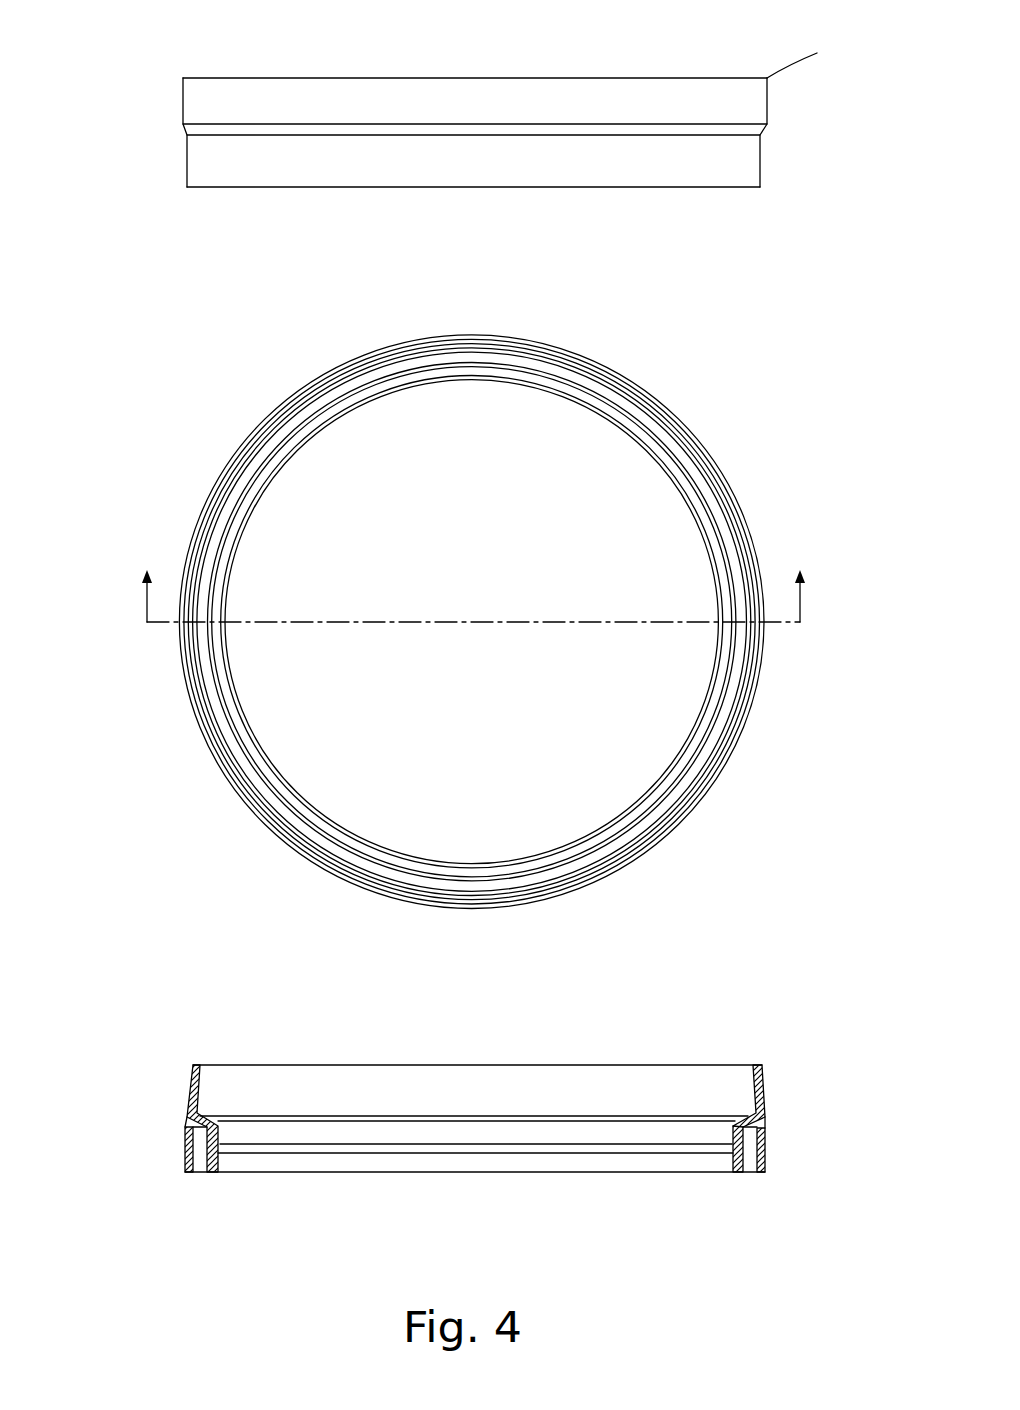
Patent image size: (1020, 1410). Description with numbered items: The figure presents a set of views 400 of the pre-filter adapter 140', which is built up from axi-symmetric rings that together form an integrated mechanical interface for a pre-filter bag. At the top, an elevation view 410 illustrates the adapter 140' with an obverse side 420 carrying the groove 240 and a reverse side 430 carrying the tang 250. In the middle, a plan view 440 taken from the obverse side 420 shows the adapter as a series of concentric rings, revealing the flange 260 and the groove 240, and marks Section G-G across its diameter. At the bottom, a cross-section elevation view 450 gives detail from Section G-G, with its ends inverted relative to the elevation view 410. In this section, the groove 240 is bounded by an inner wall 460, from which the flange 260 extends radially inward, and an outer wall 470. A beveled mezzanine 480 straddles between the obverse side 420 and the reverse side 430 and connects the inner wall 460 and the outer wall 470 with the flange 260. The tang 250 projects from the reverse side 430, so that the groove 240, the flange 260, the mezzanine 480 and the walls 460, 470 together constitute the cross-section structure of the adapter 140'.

The set of views 400 is at (121, 110).
The elevation view 410 is at (878, 211).
The reverse side 430 is at (760, 187).
The plan view 440 is at (875, 903).
The adapter 140' is at (471, 620).
The flange 260 is at (642, 448).
The groove 240 is at (722, 545).
The cross-section elevation view 450 is at (803, 1208).
The tang 250 is at (200, 1083).
The beveled mezzanine 480 is at (187, 1125).
The obverse side 420 is at (185, 1172).
The inner wall 460 is at (735, 1132).
The outer wall 470 is at (765, 1163).